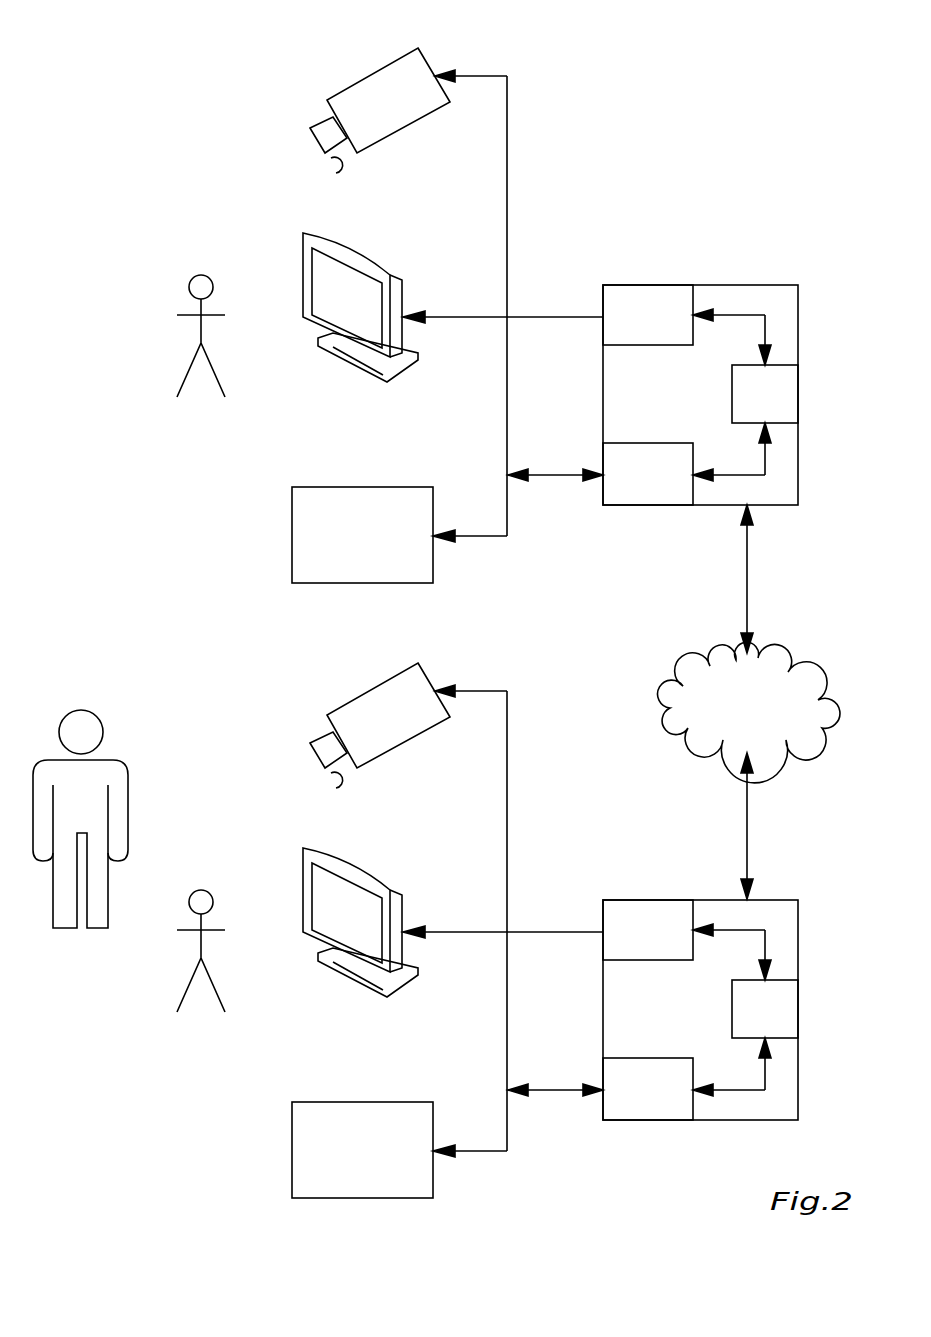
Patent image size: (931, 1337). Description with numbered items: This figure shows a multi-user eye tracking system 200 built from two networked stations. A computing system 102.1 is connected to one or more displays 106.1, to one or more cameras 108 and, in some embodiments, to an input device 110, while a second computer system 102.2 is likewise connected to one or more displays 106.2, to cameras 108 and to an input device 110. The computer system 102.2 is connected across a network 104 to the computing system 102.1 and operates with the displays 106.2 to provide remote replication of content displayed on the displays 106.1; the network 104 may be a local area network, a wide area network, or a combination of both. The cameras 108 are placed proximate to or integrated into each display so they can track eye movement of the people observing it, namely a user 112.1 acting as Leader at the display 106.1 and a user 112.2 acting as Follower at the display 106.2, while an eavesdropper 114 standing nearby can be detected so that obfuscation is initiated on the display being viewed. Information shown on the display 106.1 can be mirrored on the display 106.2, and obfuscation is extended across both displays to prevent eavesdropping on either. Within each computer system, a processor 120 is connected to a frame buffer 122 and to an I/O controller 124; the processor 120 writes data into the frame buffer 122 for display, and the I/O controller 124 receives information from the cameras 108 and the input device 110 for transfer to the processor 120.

The multi-user eye tracking system 200 is at (138, 35).
The computing system 102.1 is at (722, 994).
The computer system 102.2 is at (785, 285).
The network 104 is at (820, 670).
The display 106.1 is at (360, 916).
The display 106.2 is at (363, 248).
The camera 108 is at (372, 73).
The input device 110 is at (362, 487).
The user 112.1 is at (201, 890).
The user 112.2 is at (201, 275).
The eavesdropper 114 is at (81, 710).
The processor 120 is at (796, 383).
The frame buffer 122 is at (663, 292).
The I/O controller 124 is at (663, 497).